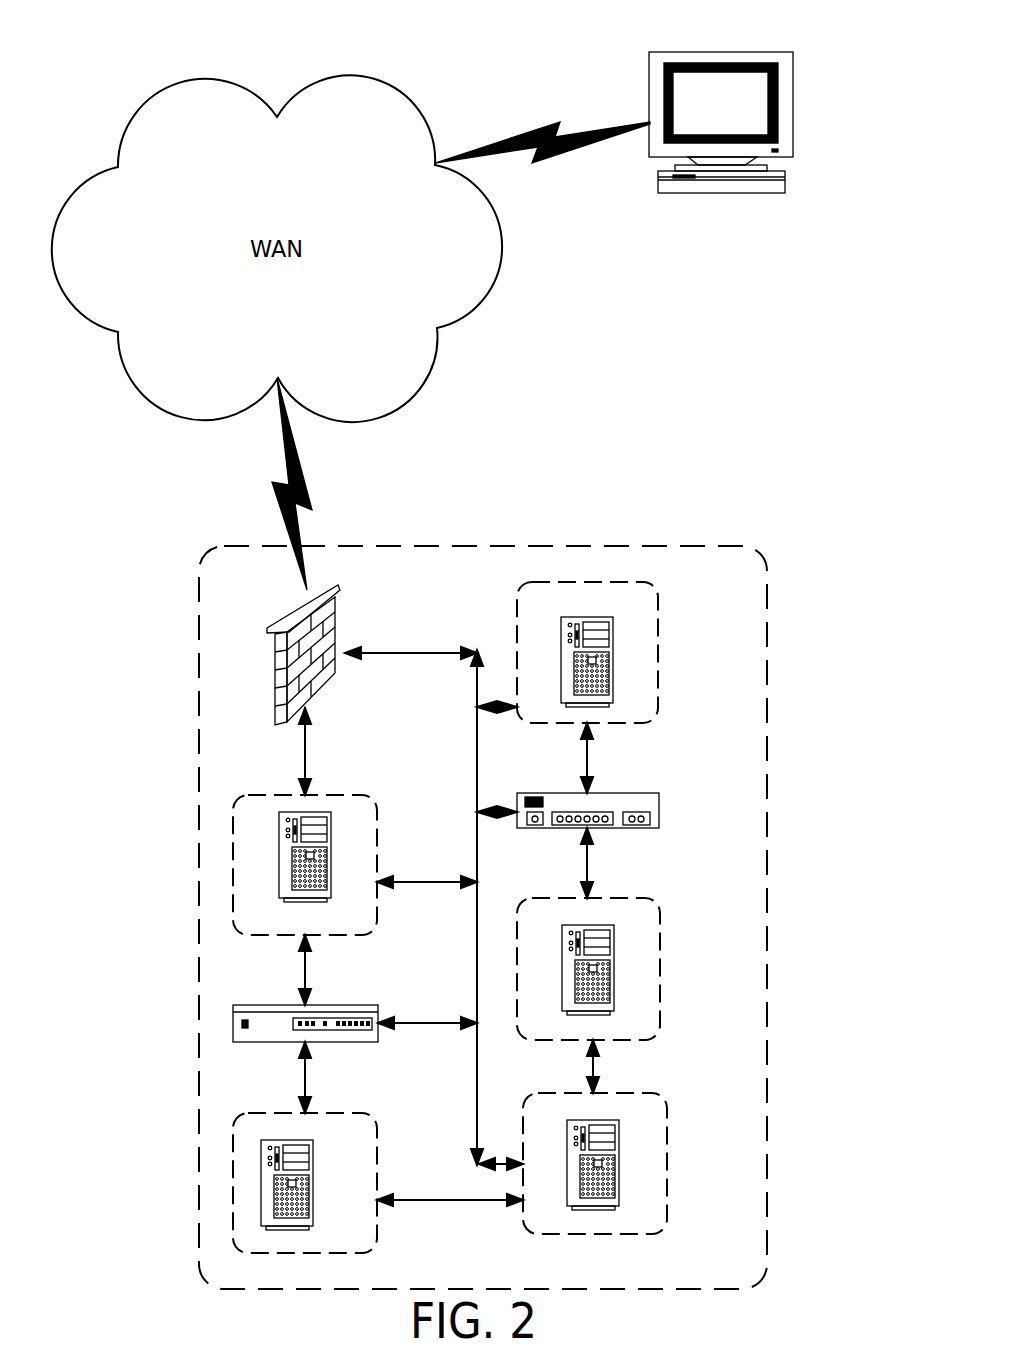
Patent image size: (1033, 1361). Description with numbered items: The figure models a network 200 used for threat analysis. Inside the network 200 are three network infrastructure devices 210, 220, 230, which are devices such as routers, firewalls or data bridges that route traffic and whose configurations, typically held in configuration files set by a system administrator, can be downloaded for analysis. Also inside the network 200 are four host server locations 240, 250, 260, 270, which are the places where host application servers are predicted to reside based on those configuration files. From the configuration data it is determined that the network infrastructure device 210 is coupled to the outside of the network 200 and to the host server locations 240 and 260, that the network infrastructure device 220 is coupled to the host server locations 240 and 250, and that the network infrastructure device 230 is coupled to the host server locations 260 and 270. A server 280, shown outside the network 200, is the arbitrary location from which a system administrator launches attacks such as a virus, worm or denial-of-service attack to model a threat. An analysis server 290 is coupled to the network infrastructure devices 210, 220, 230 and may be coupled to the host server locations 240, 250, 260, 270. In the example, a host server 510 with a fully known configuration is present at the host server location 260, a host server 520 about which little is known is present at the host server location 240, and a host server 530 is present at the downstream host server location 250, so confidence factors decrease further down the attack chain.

The network 200 is at (495, 544).
The network infrastructure device 210 is at (335, 633).
The network infrastructure device 220 is at (660, 810).
The network infrastructure device 230 is at (378, 1023).
The host server location 240 is at (636, 636).
The host server location 250 is at (637, 952).
The host server location 260 is at (353, 847).
The host server location 270 is at (377, 1150).
The server 280 is at (793, 82).
The analysis server 290 is at (667, 1125).
The host server 510 is at (332, 860).
The host server 520 is at (613, 660).
The host server 530 is at (614, 968).